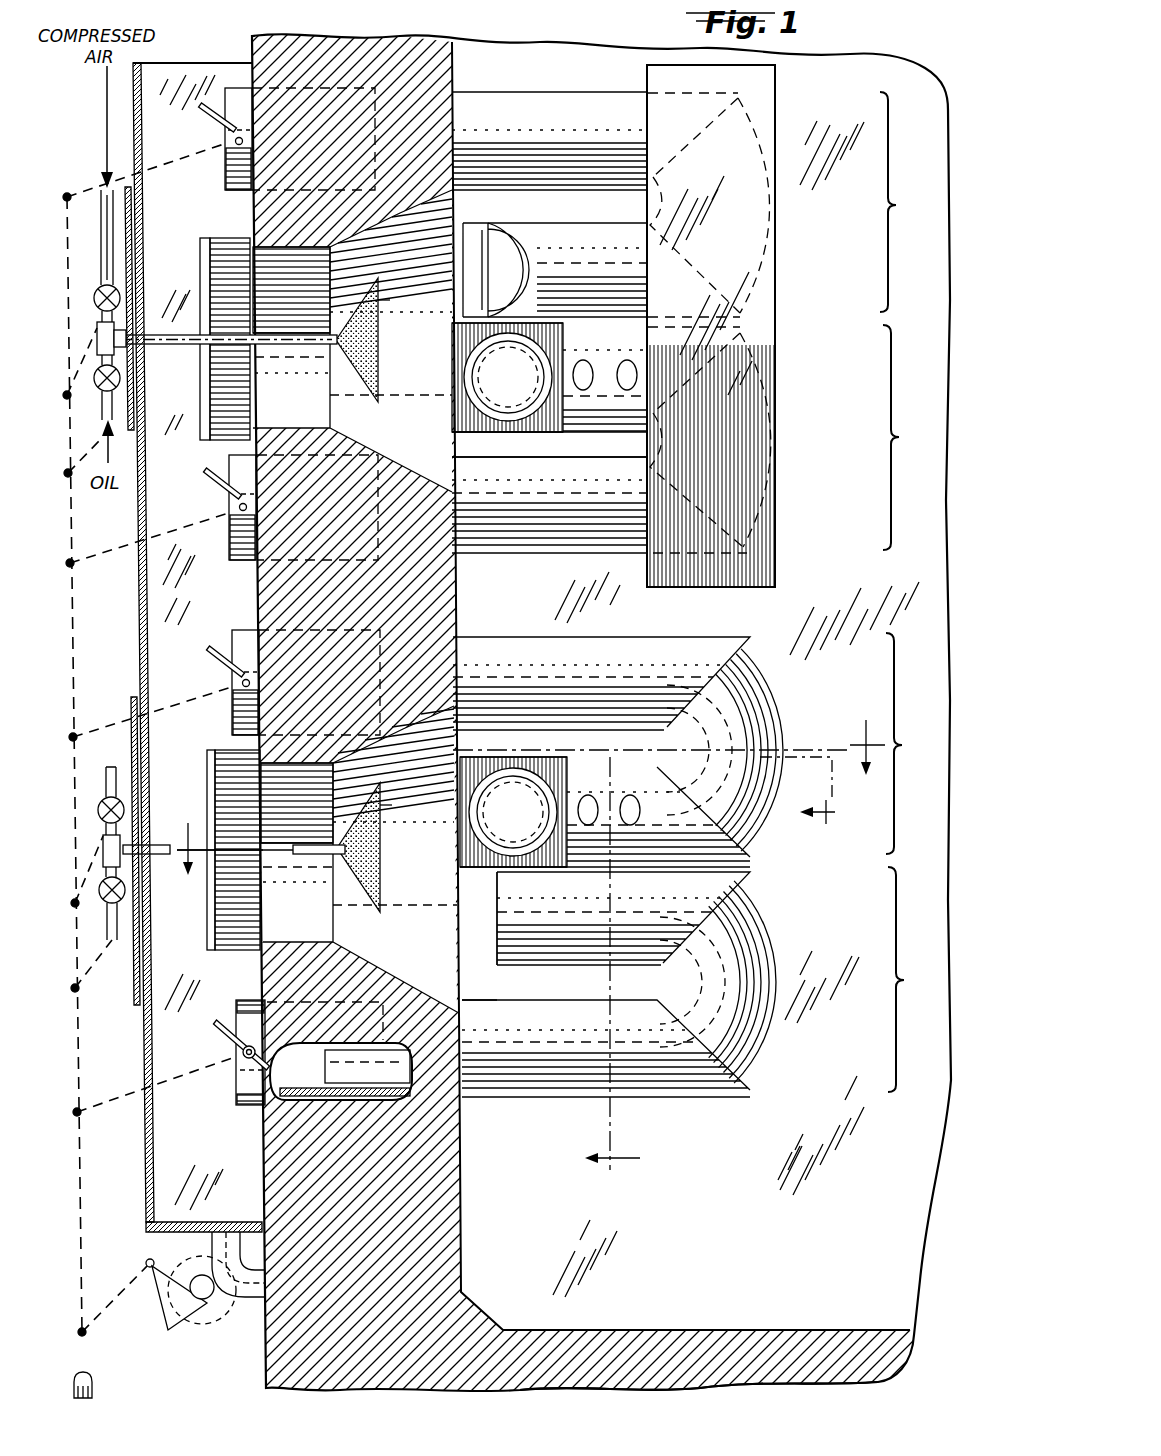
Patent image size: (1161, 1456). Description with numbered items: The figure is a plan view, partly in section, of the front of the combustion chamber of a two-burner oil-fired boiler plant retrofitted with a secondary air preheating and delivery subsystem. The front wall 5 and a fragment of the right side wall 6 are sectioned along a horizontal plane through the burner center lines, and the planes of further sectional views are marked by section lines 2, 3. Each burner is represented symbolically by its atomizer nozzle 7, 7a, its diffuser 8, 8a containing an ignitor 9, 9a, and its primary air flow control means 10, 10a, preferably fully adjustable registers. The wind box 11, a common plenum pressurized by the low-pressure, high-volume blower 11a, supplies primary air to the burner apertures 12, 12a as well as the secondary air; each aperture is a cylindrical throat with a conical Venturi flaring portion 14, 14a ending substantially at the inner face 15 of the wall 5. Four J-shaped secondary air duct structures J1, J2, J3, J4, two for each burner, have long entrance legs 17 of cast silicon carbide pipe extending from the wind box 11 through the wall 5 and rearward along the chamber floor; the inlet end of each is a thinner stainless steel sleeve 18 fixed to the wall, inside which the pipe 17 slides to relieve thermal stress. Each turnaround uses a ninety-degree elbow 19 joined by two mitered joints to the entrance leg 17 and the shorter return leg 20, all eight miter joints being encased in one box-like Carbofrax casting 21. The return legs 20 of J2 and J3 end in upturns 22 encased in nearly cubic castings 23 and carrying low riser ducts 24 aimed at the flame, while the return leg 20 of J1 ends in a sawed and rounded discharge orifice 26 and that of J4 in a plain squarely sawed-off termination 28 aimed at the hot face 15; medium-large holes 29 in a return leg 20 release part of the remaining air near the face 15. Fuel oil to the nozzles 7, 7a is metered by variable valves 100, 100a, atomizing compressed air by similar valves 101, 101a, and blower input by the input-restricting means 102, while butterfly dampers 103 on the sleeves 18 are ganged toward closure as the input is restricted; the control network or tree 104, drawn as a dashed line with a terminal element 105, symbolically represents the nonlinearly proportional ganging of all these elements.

The front wall 5 is at (424, 1176).
The right side wall 6 is at (850, 1360).
The atomizer nozzle 7 is at (357, 845).
The atomizer nozzle 7a is at (326, 346).
The diffuser 8 is at (382, 888).
The diffuser 8a is at (380, 382).
The ignitor 9 is at (380, 800).
The ignitor 9a is at (447, 307).
The primary air flow control means 10 is at (216, 762).
The primary air flow control means 10a is at (214, 238).
The wind box 11 is at (148, 82).
The blower 11a is at (217, 1318).
The burner aperture 12 is at (313, 897).
The burner aperture 12a is at (298, 288).
The Venturi flaring portion 14 is at (425, 1000).
The Venturi flaring portion 14a is at (412, 470).
The inner face 15 is at (462, 1230).
The entrance leg 17 is at (355, 1092).
The inlet end sleeve 18 is at (246, 1104).
The elbow 19 is at (770, 925).
The return leg 20 is at (740, 832).
The box-like casting 21 is at (736, 326).
The upturn 22 is at (440, 426).
The Carbofrax casting 23 is at (452, 888).
The low riser duct 24 is at (470, 836).
The discharge arrangement 26 is at (478, 212).
The termination 28 is at (486, 940).
The holes 29 is at (583, 392).
The variable metering valve 100 is at (125, 893).
The variable metering valve 100a is at (121, 378).
The compressed air valve 101 is at (100, 800).
The compressed air valve 101a is at (122, 298).
The input-restricting means 102 is at (160, 1312).
The butterfly damper 103 is at (220, 1048).
The control network 104 is at (87, 1293).
The handle 105 is at (96, 1392).
The section line 2- 2 is at (531, 813).
The section line 3- 3 is at (699, 965).
The J-shaped secondary air duct structure J1 is at (904, 202).
The J-shaped secondary air duct structure J2 is at (907, 437).
The J-shaped secondary air duct structure J3 is at (910, 743).
The J-shaped secondary air duct structure J4 is at (912, 979).